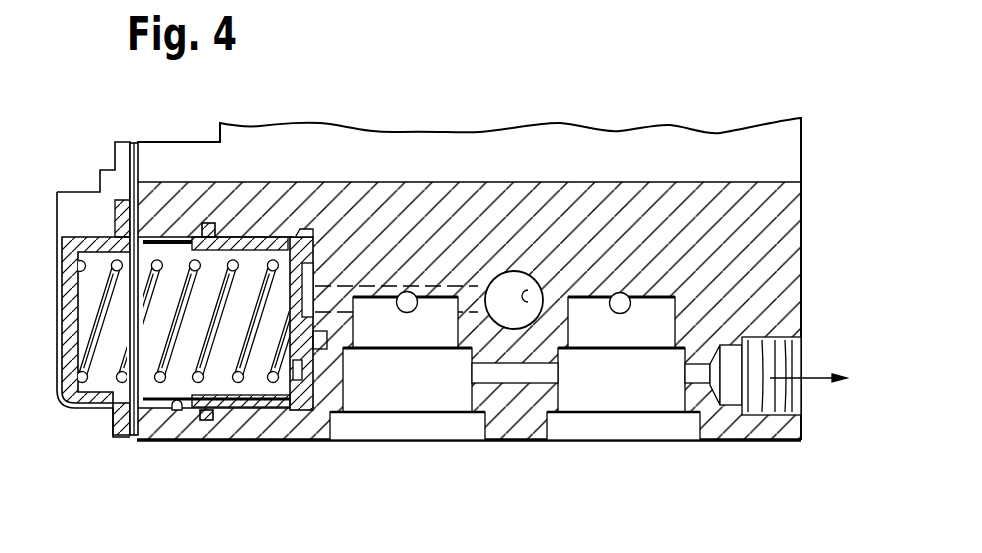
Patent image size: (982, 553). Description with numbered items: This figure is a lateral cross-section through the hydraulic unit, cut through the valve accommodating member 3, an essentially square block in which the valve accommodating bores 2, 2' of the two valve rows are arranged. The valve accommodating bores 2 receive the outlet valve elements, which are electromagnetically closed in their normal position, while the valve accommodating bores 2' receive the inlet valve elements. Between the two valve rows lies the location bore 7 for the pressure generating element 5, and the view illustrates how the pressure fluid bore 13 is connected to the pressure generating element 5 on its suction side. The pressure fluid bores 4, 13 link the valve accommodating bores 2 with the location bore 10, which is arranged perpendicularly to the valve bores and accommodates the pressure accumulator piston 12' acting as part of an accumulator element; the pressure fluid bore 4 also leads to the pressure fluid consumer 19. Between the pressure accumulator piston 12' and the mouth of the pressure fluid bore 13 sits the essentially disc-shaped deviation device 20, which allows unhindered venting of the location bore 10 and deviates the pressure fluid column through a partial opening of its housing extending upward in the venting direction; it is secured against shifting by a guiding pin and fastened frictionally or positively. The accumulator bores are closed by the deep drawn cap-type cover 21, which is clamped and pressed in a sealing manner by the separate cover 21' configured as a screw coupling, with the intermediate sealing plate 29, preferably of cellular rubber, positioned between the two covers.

The valve accommodating bore 2 is at (407, 405).
The valve accommodating bore 2' is at (623, 405).
The valve accommodating member 3 is at (258, 424).
The pressure fluid bore 4 is at (529, 374).
The pressure generating element 5 is at (530, 296).
The location bore 7 is at (515, 272).
The location bore 10 is at (173, 418).
The pressure accumulator piston 12' is at (215, 191).
The pressure fluid bore 13 is at (472, 279).
The pressure fluid consumer 19 is at (813, 380).
The deviation device 20 is at (318, 245).
The cover 21 is at (96, 367).
The cover 21' is at (93, 270).
The sealing plate 29 is at (133, 437).